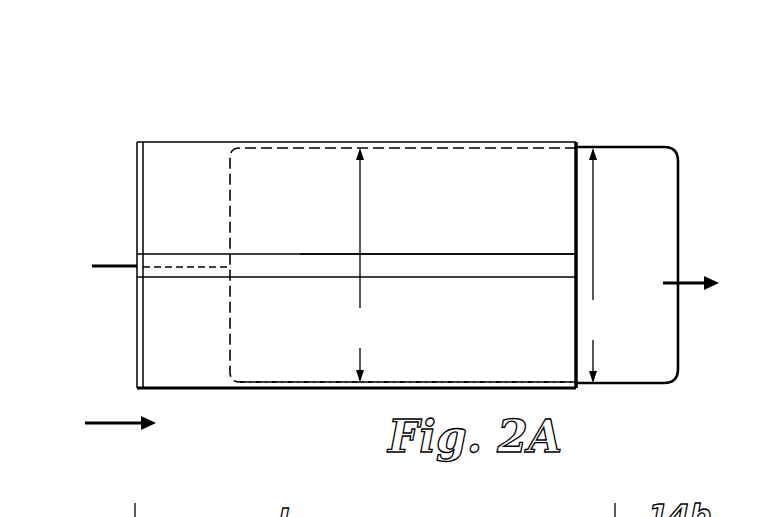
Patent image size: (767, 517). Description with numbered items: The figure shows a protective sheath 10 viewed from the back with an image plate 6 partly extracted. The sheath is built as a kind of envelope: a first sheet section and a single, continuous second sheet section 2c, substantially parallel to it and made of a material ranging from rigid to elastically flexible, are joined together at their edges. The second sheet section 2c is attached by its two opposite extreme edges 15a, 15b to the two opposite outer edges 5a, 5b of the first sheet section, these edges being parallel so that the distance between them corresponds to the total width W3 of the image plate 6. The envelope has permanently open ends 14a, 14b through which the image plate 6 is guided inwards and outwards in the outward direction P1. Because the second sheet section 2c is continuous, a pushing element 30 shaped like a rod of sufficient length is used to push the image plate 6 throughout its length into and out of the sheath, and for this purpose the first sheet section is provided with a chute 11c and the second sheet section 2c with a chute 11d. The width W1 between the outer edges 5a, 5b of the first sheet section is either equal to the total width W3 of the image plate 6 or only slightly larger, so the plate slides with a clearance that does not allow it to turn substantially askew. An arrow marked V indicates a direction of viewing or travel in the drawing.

The protective sheath 10 is at (170, 196).
The permanently open end 14a is at (132, 153).
The permanently open end 14b is at (586, 142).
The outer edge of the first sheet section 5a is at (403, 229).
The extreme edge of the second sheet section 15a is at (407, 138).
The outer edge of the first sheet section 5b is at (390, 418).
The extreme edge of the second sheet section 15b is at (226, 390).
The second sheet section 2c is at (184, 314).
The pushing element 30 is at (112, 264).
The chute 11c is at (133, 279).
The chute 11d is at (460, 257).
The image plate 6 is at (627, 265).
The width between the outer edges of the first sheet section W1 is at (366, 265).
The total width of the image plate W3 is at (602, 265).
The outward direction P1 is at (698, 302).
The feed direction V is at (120, 407).